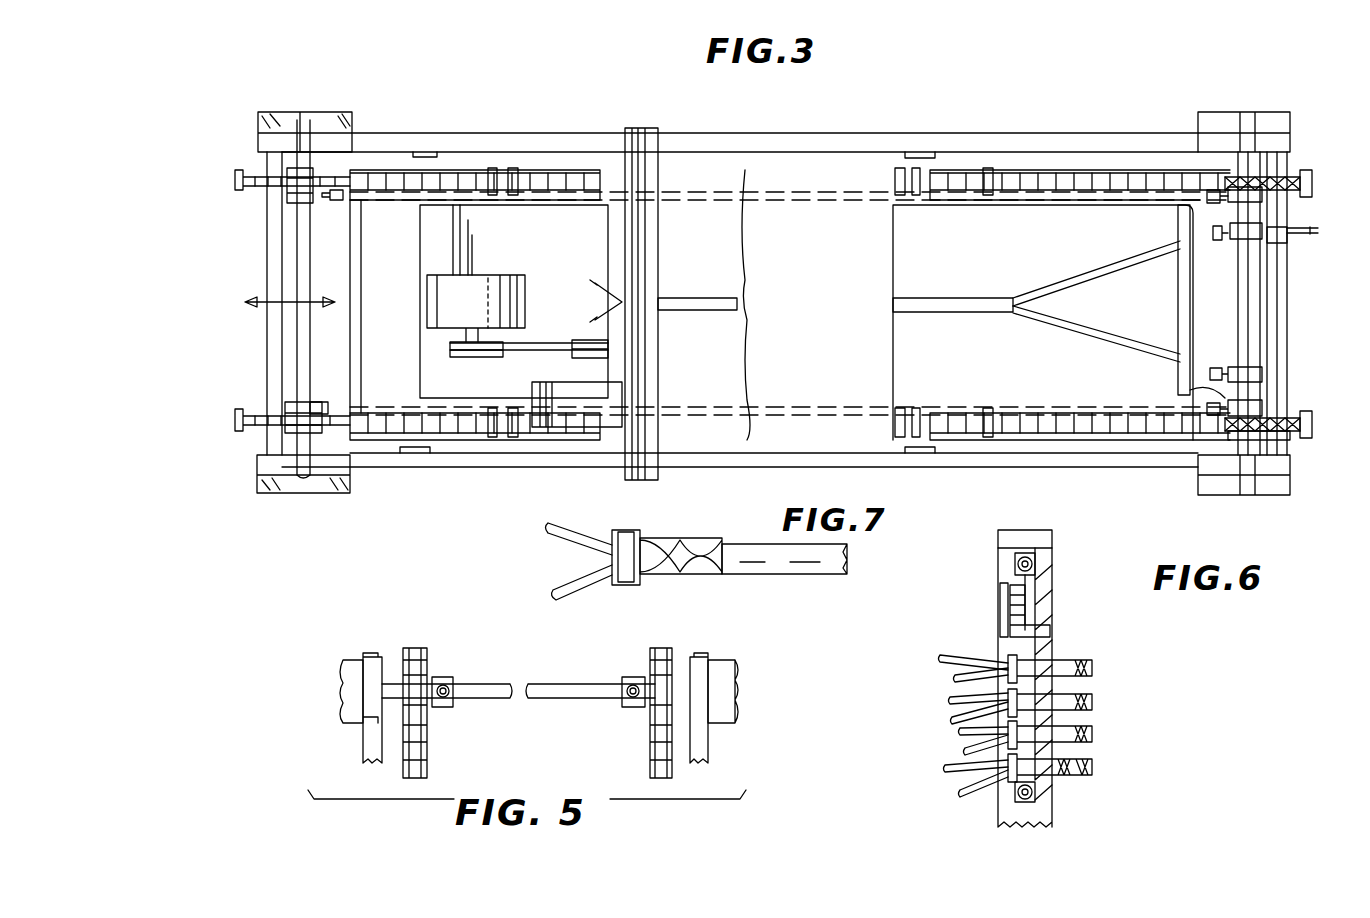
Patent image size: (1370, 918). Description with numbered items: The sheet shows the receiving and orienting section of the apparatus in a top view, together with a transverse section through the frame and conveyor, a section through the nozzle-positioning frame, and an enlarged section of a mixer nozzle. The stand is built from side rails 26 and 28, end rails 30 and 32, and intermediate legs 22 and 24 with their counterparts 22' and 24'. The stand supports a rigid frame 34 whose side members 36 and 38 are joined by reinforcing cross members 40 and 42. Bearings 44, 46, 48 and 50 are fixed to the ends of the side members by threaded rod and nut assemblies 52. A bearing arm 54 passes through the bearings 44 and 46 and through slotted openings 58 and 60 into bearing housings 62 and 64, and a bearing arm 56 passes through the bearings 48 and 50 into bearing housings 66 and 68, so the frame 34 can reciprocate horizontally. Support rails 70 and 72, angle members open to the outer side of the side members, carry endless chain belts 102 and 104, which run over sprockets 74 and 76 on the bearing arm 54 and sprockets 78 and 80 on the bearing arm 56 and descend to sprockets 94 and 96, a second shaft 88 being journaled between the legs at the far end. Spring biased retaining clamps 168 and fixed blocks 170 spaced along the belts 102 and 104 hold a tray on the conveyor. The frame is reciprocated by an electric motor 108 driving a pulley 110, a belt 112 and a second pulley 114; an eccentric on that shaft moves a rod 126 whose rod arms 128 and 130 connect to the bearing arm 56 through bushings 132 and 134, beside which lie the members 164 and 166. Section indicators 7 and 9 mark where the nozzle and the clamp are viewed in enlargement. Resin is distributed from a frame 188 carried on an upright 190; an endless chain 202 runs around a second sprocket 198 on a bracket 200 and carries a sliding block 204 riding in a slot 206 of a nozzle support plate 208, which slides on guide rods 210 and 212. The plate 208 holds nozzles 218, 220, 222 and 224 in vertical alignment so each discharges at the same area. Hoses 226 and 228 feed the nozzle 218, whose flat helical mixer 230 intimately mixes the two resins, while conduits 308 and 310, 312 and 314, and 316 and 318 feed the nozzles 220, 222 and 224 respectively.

In FIG. 3, the section line 7 is at (1298, 245).
In FIG. 6, the section line 7 is at (1065, 702).
In FIG. 3, the section line 9 is at (864, 410).
In FIG. 3, the intermediate leg 22 is at (410, 476).
In FIG. 3, the tab 22' is at (409, 133).
In FIG. 3, the intermediate leg 24 is at (932, 473).
In FIG. 3, the tab 24' is at (928, 128).
In FIG. 3, the side rail 26 is at (460, 467).
In FIG. 5, the side rail 26 is at (370, 658).
In FIG. 3, the side rail 28 is at (470, 133).
In FIG. 5, the side rail 28 is at (700, 662).
In FIG. 3, the end rail 30 is at (273, 275).
In FIG. 3, the end rail 32 is at (1272, 300).
In FIG. 3, the rigid frame 34 is at (1005, 207).
In FIG. 3, the side member 36 is at (1017, 413).
In FIG. 5, the side member 36 is at (453, 708).
In FIG. 3, the side member 38 is at (942, 197).
In FIG. 5, the side member 38 is at (630, 708).
In FIG. 3, the reinforcing cross member 40 is at (364, 228).
In FIG. 5, the reinforcing cross member 40 is at (560, 685).
In FIG. 3, the reinforcing cross member 42 is at (1180, 215).
In FIG. 3, the bearing 44 is at (314, 405).
In FIG. 3, the bearing 46 is at (343, 202).
In FIG. 3, the bearing 48 is at (1262, 405).
In FIG. 3, the bearing 50 is at (1266, 198).
In FIG. 3, the threaded rod and nut assembly 52 is at (1190, 394).
In FIG. 3, the bearing arm 54 is at (306, 214).
In FIG. 5, the bearing arm 54 is at (385, 688).
In FIG. 3, the bearing arm 56 is at (1243, 298).
In FIG. 3, the slotted opening 58 is at (270, 460).
In FIG. 3, the slotted opening 60 is at (270, 152).
In FIG. 3, the bearing housing 62 is at (300, 489).
In FIG. 5, the bearing housing 62 is at (345, 690).
In FIG. 3, the bearing housing 64 is at (271, 112).
In FIG. 5, the bearing housing 64 is at (725, 692).
In FIG. 3, the bearing housing 66 is at (1285, 488).
In FIG. 3, the bearing housing 68 is at (1246, 112).
In FIG. 3, the support rail 70 is at (372, 412).
In FIG. 5, the support rail 70 is at (444, 669).
In FIG. 3, the support rail 72 is at (578, 172).
In FIG. 5, the support rail 72 is at (648, 680).
In FIG. 3, the sprocket 74 is at (290, 404).
In FIG. 5, the sprocket 74 is at (423, 726).
In FIG. 3, the sprocket 76 is at (290, 188).
In FIG. 5, the sprocket 76 is at (652, 722).
In FIG. 3, the sprocket 78 is at (1278, 440).
In FIG. 3, the sprocket 80 is at (1225, 178).
In FIG. 3, the second shaft 88 is at (1283, 320).
In FIG. 3, the sprocket 94 is at (243, 421).
In FIG. 3, the sprocket 96 is at (243, 187).
In FIG. 3, the endless chain belt 102 is at (1073, 420).
In FIG. 5, the endless chain belt 102 is at (420, 652).
In FIG. 3, the endless chain belt 104 is at (1102, 174).
In FIG. 5, the endless chain belt 104 is at (655, 652).
In FIG. 3, the electric motor 108 is at (490, 278).
In FIG. 3, the pulley 110 is at (450, 355).
In FIG. 3, the belt 112 is at (538, 343).
In FIG. 3, the second pulley 114 is at (594, 356).
In FIG. 3, the rod 126 is at (957, 300).
In FIG. 3, the rod arm 128 is at (1100, 336).
In FIG. 3, the rod arm 130 is at (1075, 262).
In FIG. 3, the bushing 132 is at (1230, 367).
In FIG. 3, the bushing 134 is at (1228, 235).
In FIG. 3, the adjusting block 164 is at (1286, 239).
In FIG. 3, the adjusting rod 166 is at (1286, 258).
In FIG. 3, the spring biased retaining clamp 168 is at (495, 168).
In FIG. 3, the fixed block 170 is at (988, 168).
In FIG. 3, the frame 188 is at (644, 130).
In FIG. 6, the frame 188 is at (1030, 535).
In FIG. 6, the upright 190 is at (1046, 813).
In FIG. 6, the second sprocket 198 is at (1018, 605).
In FIG. 6, the bracket 200 is at (1003, 588).
In FIG. 6, the endless chain 202 is at (1020, 566).
In FIG. 6, the sliding block 204 is at (1050, 640).
In FIG. 6, the slot 206 is at (1048, 592).
In FIG. 6, the nozzle support plate 208 is at (1055, 650).
In FIG. 6, the guide rod 210 is at (1004, 552).
In FIG. 6, the guide rod 212 is at (1020, 790).
In FIG. 7, the nozzle 218 is at (758, 548).
In FIG. 6, the nozzle 218 is at (1092, 767).
In FIG. 6, the nozzle 220 is at (1092, 732).
In FIG. 6, the nozzle 222 is at (1092, 704).
In FIG. 3, the nozzle 224 is at (692, 298).
In FIG. 6, the nozzle 224 is at (1092, 668).
In FIG. 7, the hose 226 is at (552, 575).
In FIG. 6, the hose 226 is at (960, 789).
In FIG. 7, the hose 228 is at (600, 498).
In FIG. 6, the hose 228 is at (948, 768).
In FIG. 7, the mixer 230 is at (690, 540).
In FIG. 6, the conduit 308 is at (967, 753).
In FIG. 6, the conduit 310 is at (963, 732).
In FIG. 6, the conduit 312 is at (955, 720).
In FIG. 6, the conduit 314 is at (950, 698).
In FIG. 6, the conduit 316 is at (953, 678).
In FIG. 6, the conduit 318 is at (940, 657).